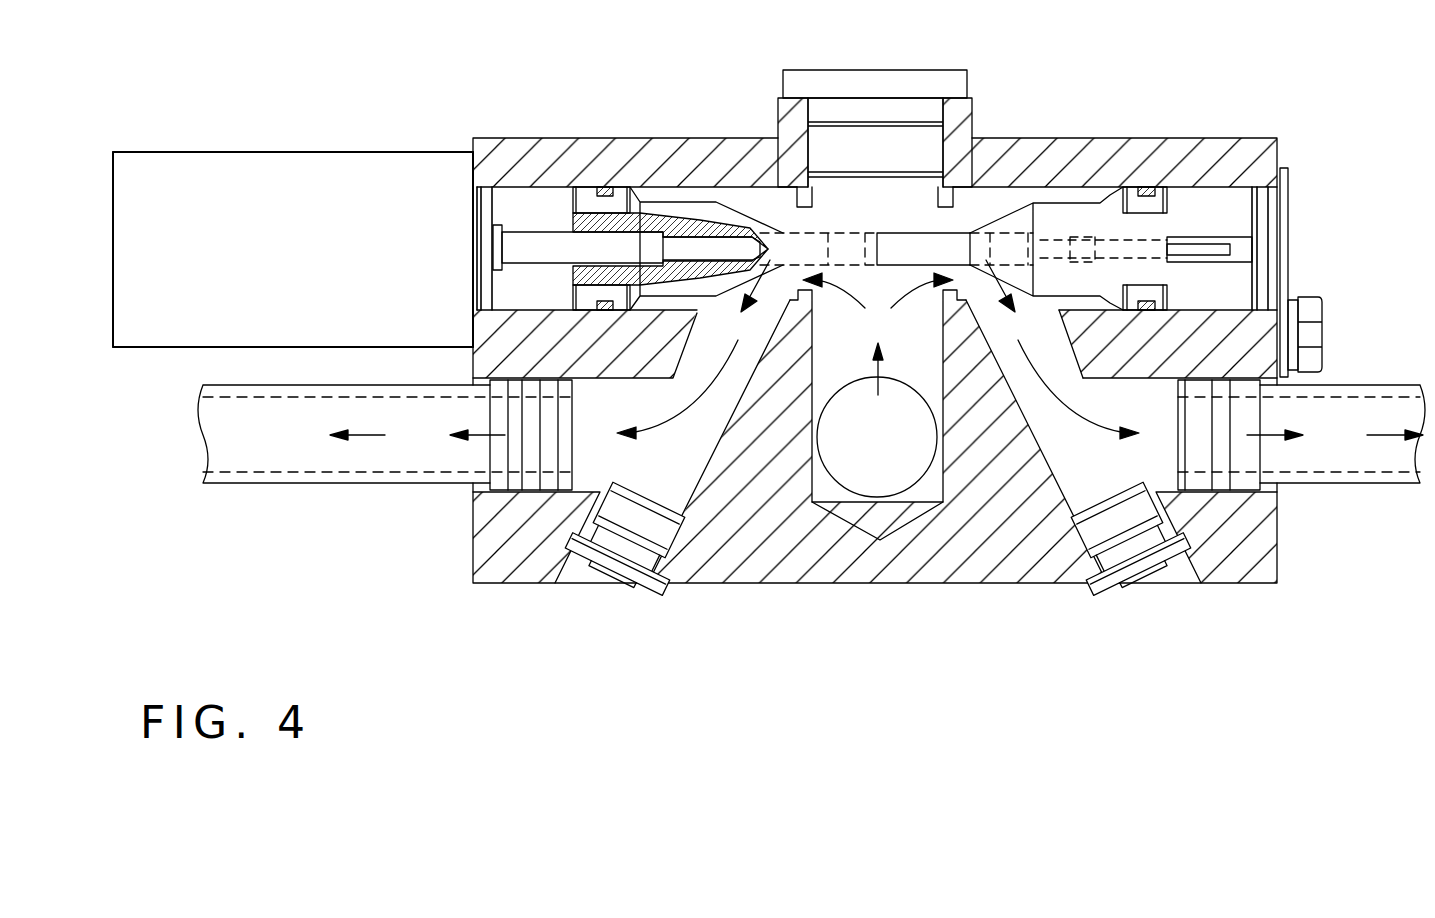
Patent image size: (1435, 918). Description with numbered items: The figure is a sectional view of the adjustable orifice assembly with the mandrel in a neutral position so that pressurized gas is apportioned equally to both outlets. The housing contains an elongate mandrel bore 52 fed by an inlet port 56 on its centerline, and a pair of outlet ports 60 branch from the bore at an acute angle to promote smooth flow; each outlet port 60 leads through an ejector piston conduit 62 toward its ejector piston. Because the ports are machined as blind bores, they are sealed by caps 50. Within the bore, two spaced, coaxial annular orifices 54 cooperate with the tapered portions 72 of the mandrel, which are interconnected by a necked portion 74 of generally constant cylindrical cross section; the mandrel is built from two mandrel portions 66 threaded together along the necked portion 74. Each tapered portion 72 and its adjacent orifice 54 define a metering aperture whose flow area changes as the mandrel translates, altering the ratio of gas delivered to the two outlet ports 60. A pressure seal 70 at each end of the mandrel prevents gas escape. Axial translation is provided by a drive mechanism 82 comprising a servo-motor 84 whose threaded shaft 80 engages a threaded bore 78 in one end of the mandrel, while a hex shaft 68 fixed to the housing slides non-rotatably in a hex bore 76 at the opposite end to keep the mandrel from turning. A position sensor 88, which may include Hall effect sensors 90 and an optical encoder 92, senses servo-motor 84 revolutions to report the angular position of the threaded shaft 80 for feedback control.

The cap 50 is at (955, 90).
The mandrel bore 52 is at (793, 190).
The annular orifice 54 is at (782, 200).
The inlet port 56 is at (850, 452).
The outlet port 60 is at (640, 457).
The ejector piston conduit 62 is at (290, 485).
The mandrel portion 66 is at (612, 200).
The hex shaft 68 is at (1185, 250).
The pressure seal 70 is at (603, 186).
The tapered portion 72 is at (733, 215).
The necked portion 74 is at (913, 247).
The hex bore 76 is at (1057, 232).
The threaded bore 78 is at (683, 242).
The threaded shaft 80 is at (497, 255).
The drive mechanism 82 is at (307, 264).
The servo-motor 84 is at (293, 249).
The position sensor 88 is at (118, 200).
The Hall effect sensor 90 is at (293, 249).
The optical encoder 92 is at (293, 249).